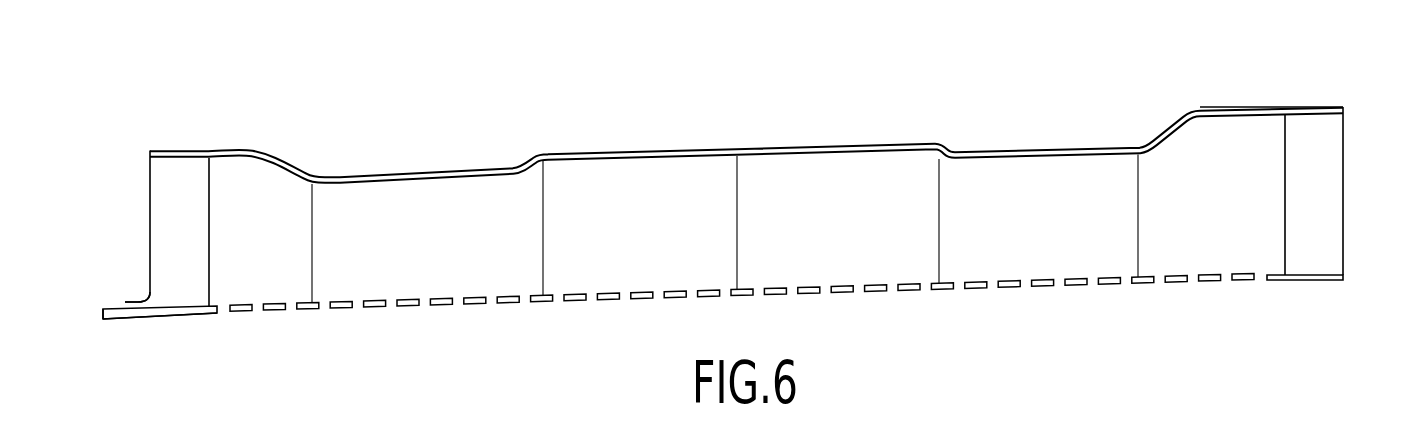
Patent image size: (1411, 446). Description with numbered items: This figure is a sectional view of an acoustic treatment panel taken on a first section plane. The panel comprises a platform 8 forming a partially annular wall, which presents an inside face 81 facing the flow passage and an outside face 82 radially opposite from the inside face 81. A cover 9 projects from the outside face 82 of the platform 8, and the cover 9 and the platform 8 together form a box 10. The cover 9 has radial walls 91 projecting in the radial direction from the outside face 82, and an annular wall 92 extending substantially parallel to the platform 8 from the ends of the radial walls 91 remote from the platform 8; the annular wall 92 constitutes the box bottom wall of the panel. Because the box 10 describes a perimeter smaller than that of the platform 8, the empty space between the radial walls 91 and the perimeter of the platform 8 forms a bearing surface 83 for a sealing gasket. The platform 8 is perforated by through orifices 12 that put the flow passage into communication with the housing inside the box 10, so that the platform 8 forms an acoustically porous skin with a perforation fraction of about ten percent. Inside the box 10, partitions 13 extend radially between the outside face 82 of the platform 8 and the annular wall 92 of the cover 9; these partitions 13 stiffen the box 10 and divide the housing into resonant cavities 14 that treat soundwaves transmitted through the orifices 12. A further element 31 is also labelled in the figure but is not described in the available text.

The platform 8 is at (188, 319).
The cover 9 is at (1308, 140).
The box 10 is at (1245, 104).
The through orifices 12 is at (329, 310).
The partitions 13 is at (312, 215).
The resonant cavities 14 is at (265, 196).
The side wall 31 is at (184, 183).
The inside face 81 is at (157, 323).
The outside face 82 is at (124, 299).
The bearing surface 83 is at (113, 302).
The radial walls 91 is at (1315, 220).
The annular wall 92 is at (1310, 106).